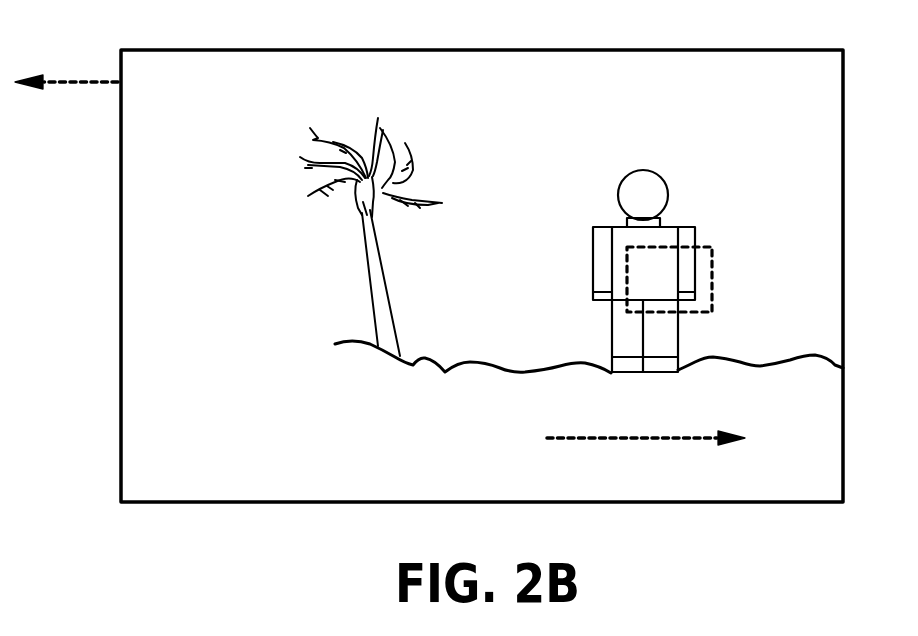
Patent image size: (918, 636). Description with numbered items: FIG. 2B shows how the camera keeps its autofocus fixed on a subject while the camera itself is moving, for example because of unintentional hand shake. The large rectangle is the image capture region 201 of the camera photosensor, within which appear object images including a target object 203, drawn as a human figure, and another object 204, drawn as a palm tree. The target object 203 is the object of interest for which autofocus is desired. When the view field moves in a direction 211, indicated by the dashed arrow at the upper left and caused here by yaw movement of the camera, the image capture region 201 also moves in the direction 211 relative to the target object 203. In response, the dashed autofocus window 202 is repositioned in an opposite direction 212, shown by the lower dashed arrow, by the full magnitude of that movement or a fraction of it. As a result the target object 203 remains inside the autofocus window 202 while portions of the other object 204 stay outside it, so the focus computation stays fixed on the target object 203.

The image capture region 201 is at (120, 407).
The autofocus window 202 is at (712, 278).
The target object 203 is at (594, 227).
The other object 204 is at (380, 118).
The direction of view field movement 211 is at (75, 82).
The opposite direction 212 is at (660, 441).